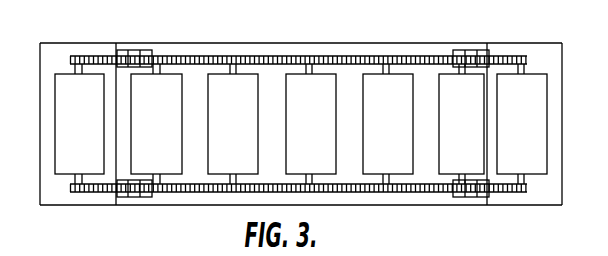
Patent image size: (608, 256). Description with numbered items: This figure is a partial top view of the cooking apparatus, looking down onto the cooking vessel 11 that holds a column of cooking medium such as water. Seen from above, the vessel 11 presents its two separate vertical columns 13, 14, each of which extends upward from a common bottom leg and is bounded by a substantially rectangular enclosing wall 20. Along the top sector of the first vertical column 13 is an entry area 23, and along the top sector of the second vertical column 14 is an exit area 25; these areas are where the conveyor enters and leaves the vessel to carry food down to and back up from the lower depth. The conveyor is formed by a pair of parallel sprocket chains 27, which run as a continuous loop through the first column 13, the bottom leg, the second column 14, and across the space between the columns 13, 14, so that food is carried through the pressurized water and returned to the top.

The cooking vessel 11 is at (60, 53).
The first vertical column 13 is at (52, 200).
The second vertical column 14 is at (530, 198).
The enclosing wall 20 is at (115, 80).
The entry area 23 is at (48, 136).
The exit area 25 is at (542, 60).
The sprocket chains 27 is at (382, 57).